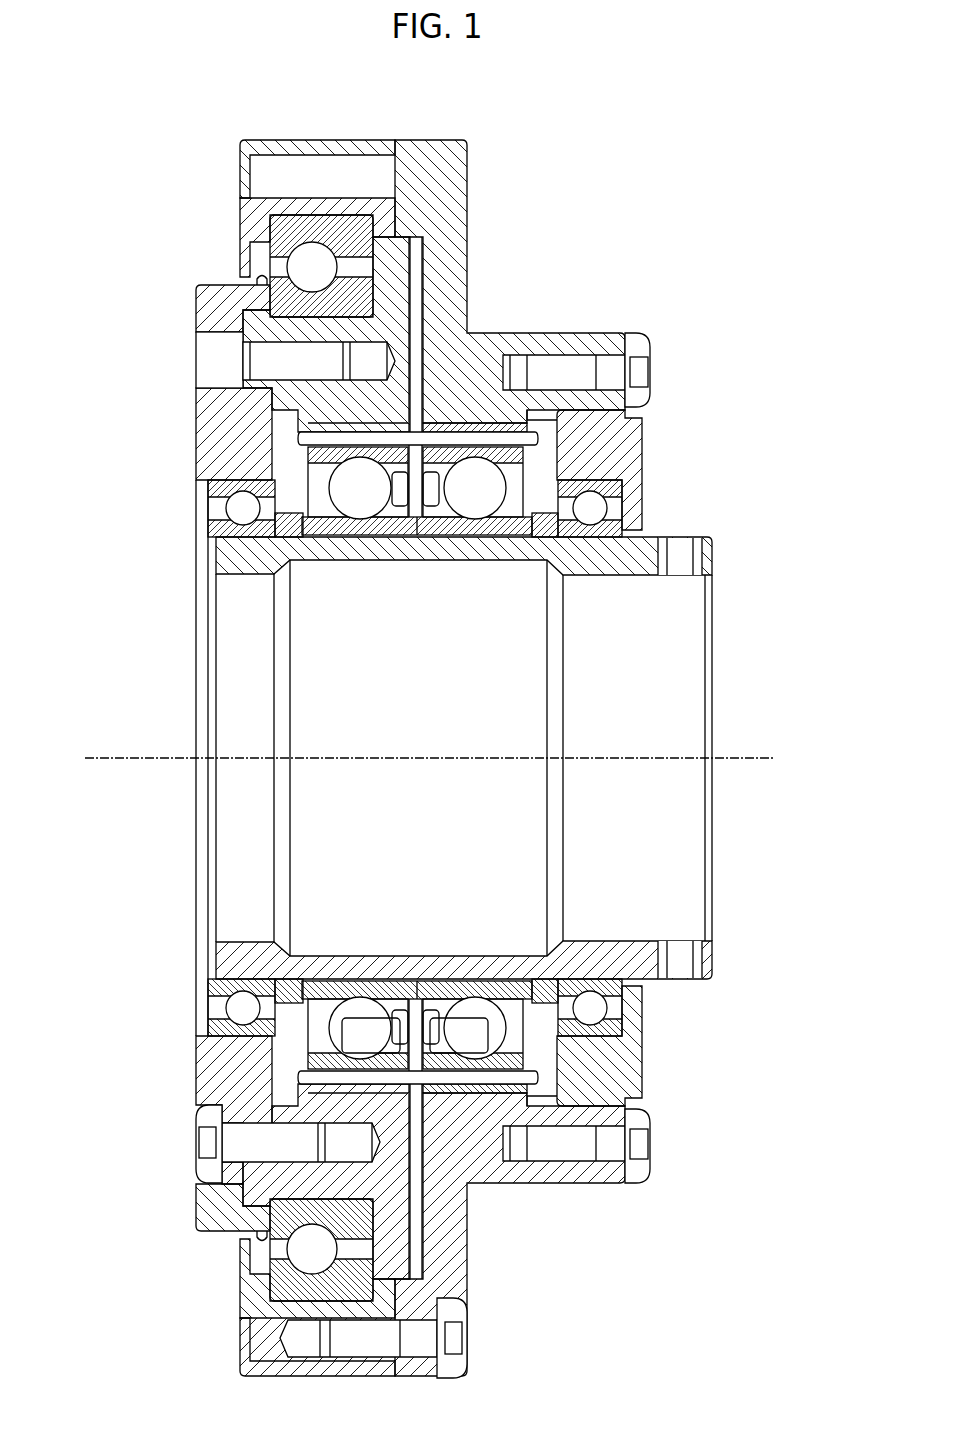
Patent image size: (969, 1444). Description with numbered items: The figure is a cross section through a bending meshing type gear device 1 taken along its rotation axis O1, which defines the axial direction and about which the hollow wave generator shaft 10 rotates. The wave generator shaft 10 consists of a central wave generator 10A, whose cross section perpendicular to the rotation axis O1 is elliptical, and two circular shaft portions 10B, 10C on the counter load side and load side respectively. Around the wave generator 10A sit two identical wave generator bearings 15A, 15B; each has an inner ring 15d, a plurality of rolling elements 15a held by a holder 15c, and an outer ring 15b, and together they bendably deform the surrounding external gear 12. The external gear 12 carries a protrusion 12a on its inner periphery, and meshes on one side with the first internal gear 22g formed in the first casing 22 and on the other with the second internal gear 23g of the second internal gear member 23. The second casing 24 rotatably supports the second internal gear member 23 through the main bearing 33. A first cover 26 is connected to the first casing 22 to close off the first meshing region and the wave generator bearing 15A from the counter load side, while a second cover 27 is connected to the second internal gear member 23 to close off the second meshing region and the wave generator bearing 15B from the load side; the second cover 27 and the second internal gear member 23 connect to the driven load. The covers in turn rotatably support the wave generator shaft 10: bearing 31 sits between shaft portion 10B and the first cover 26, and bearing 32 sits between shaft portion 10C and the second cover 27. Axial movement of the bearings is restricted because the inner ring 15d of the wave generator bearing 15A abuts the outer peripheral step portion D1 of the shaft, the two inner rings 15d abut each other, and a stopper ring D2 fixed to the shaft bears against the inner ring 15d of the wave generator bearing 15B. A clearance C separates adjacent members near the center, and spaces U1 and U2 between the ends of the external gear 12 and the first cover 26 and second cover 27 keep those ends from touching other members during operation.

The bending meshing type gear device 1 is at (722, 118).
The wave generator shaft 10 is at (712, 538).
The wave generator 10A is at (547, 932).
The shaft portion 10B is at (705, 932).
The shaft portion 10C is at (274, 932).
The external gear 12 is at (240, 272).
The protrusion 12a is at (468, 360).
The wave generator bearing 15A is at (474, 548).
The wave generator bearing 15B is at (359, 548).
The rolling elements 15a is at (366, 498).
The outer ring 15b is at (290, 524).
The holder 15c is at (434, 492).
The inner ring 15d is at (340, 530).
The first casing 22 is at (433, 150).
The first internal gear 22g is at (492, 372).
The second internal gear member 23 is at (262, 320).
The second internal gear 23g is at (262, 283).
The second casing 24 is at (313, 143).
The first cover 26 is at (642, 438).
The second cover 27 is at (200, 440).
The bearing 31 is at (591, 506).
The bearing 32 is at (243, 505).
The main bearing 33 is at (322, 258).
The clearance C is at (415, 412).
The space U1 is at (549, 425).
The space U2 is at (283, 427).
The outer peripheral step portion D1 is at (546, 992).
The stopper ring D2 is at (297, 988).
The rotation axis O1 is at (448, 760).